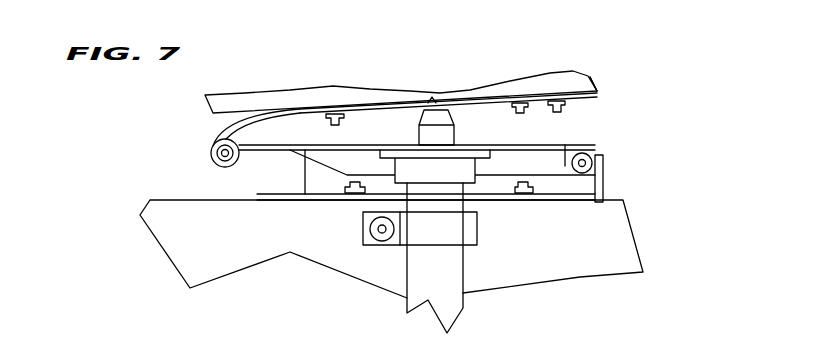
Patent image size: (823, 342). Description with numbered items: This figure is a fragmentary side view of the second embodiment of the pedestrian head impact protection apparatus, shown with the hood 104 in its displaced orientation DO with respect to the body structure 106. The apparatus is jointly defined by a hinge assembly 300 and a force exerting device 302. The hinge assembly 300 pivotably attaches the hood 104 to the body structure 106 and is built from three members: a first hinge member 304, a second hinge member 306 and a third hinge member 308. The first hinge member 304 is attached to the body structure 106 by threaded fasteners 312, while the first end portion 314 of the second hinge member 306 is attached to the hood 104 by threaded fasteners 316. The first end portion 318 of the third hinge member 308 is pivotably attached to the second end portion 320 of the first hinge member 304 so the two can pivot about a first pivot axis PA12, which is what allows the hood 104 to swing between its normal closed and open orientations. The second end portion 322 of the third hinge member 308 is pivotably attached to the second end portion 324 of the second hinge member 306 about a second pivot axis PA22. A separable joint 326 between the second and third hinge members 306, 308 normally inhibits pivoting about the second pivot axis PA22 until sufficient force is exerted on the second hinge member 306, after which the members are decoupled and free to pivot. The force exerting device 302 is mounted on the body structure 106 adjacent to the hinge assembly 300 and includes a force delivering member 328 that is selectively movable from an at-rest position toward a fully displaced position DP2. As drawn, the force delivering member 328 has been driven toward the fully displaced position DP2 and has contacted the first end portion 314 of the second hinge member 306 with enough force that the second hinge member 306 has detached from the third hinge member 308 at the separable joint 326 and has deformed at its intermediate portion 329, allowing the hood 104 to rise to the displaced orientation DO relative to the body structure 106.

The hood 104 is at (242, 97).
The body structure 106 is at (182, 257).
The hinge assembly 300 is at (604, 169).
The force exerting device 302 is at (457, 295).
The first hinge member 304 is at (600, 178).
The second hinge member 306 is at (210, 149).
The third hinge member 308 is at (578, 144).
The threaded fasteners 312 is at (518, 195).
The first end portion of second hinge member 314 is at (540, 97).
The threaded fasteners 316 is at (335, 112).
The first end portion of third hinge member 318 is at (597, 99).
The second end portion of first hinge member 320 is at (602, 190).
The second end portion of third hinge member 322 is at (260, 153).
The second end portion of second hinge member 324 is at (218, 141).
The separable joint 326 is at (513, 113).
The force delivering member 328 is at (438, 132).
The intermediate portion 329 is at (267, 120).
The fully displaced position DP2 is at (430, 96).
The first pivot axis PA12 is at (597, 150).
The second pivot axis PA22 is at (211, 151).
The displaced orientation DO is at (594, 73).